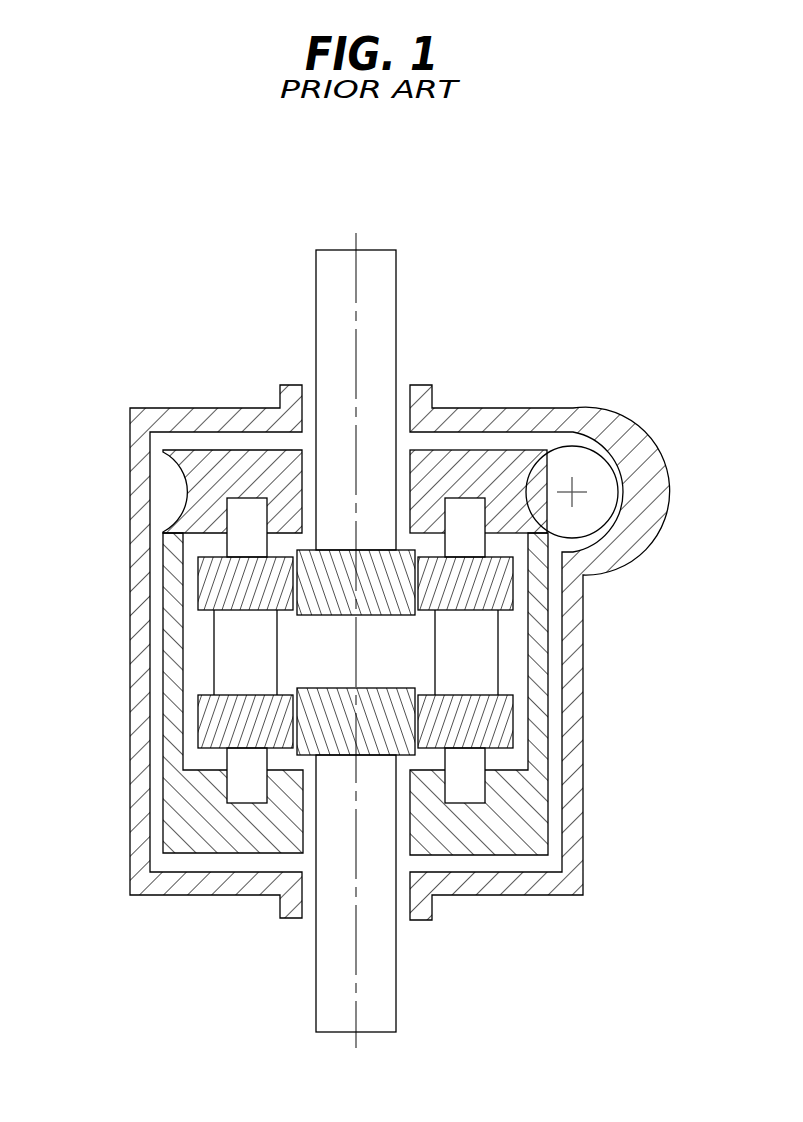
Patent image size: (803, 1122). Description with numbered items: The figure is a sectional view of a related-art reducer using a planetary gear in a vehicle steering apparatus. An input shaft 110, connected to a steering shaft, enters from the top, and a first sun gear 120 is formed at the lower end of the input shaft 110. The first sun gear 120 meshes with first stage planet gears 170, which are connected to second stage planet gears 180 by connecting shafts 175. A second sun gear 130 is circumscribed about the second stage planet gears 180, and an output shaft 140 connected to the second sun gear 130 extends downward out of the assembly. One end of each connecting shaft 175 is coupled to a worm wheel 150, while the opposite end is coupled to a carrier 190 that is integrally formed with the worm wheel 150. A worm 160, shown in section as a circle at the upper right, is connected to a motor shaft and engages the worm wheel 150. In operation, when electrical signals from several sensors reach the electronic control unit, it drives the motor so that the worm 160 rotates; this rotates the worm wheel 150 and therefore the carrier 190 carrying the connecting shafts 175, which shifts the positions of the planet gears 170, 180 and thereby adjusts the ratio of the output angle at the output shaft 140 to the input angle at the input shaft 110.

The input shaft 110 is at (387, 265).
The first sun gear 120 is at (317, 590).
The second sun gear 130 is at (317, 728).
The output shaft 140 is at (380, 1008).
The worm wheel 150 is at (500, 462).
The worm 160 is at (597, 467).
The first stage planet gears 170 is at (502, 587).
The connecting shaft 175 is at (488, 650).
The second stage planet gears 180 is at (503, 724).
The carrier 190 is at (516, 835).